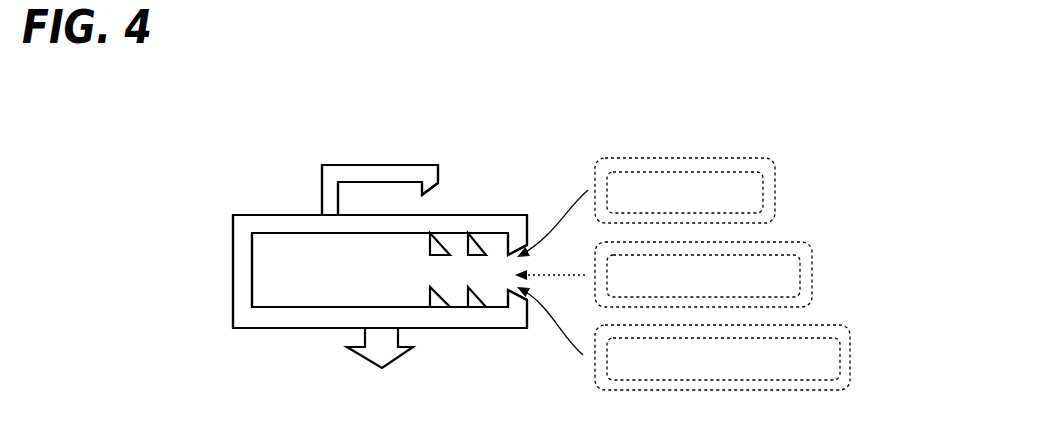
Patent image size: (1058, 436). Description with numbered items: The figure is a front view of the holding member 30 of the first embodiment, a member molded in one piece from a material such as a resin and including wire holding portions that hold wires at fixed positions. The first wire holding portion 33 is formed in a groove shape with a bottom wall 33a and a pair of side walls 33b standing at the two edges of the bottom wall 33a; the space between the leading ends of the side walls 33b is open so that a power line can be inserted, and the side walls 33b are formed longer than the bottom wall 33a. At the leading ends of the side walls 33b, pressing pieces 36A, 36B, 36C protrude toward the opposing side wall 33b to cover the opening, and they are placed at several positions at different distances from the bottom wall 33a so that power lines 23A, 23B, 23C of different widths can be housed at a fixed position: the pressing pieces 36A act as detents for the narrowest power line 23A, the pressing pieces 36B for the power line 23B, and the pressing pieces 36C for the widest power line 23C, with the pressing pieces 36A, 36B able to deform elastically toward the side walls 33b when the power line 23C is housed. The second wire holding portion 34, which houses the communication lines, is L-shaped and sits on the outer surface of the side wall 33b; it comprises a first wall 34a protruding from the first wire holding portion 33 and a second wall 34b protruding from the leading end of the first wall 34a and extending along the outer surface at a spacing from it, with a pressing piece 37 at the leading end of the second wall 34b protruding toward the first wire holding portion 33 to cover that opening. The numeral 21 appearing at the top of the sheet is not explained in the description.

The light emitting element 21 is at (530, 5).
The power line 23A is at (775, 187).
The power line 23B is at (812, 280).
The power line 23C is at (850, 360).
The holding member 30 is at (241, 104).
The first wire holding portion 33 is at (298, 328).
The bottom wall 33a is at (243, 300).
The side walls 33b is at (282, 317).
The second wire holding portion 34 is at (354, 156).
The first wall 34a is at (332, 200).
The second wall 34b is at (340, 168).
The pressing pieces 36A is at (436, 238).
The pressing pieces 36B is at (476, 238).
The pressing pieces 36C is at (520, 238).
The pressing piece 37 is at (427, 180).